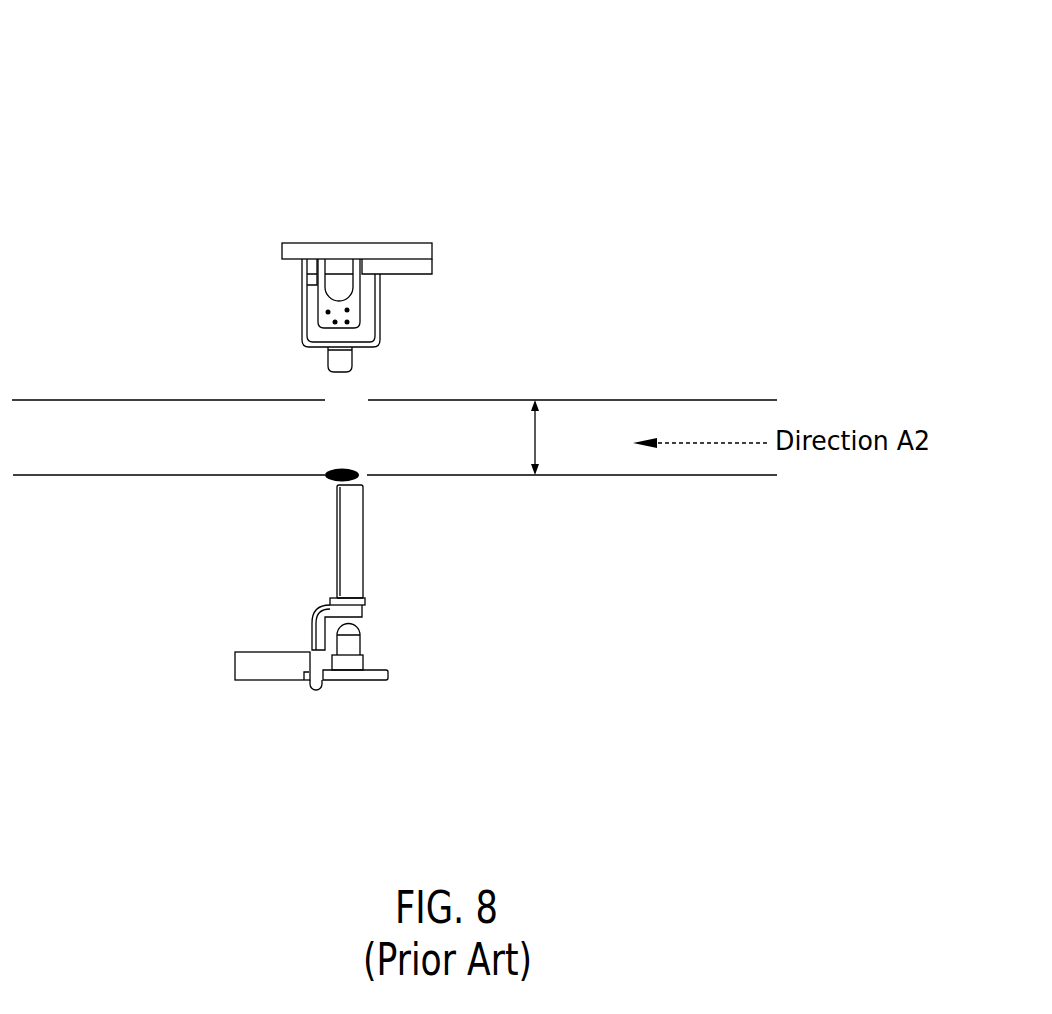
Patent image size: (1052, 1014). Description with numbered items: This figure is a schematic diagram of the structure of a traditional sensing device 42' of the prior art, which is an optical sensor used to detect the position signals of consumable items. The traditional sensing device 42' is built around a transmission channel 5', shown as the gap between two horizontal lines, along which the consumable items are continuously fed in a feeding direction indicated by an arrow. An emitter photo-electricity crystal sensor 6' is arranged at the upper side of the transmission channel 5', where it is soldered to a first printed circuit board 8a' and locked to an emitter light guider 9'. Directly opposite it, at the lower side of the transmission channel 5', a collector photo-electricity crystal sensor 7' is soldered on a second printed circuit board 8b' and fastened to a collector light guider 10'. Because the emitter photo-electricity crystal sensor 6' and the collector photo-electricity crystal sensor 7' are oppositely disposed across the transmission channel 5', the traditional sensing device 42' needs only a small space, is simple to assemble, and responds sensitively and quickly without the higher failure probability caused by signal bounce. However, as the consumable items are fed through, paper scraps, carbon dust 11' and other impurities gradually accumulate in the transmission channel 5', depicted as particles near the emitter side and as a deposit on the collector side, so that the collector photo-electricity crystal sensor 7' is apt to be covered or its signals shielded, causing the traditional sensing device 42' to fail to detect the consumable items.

The traditional sensing device 42' is at (49, 36).
The first printed circuit board 8a' is at (348, 256).
The emitter photo-electricity crystal sensor 6' is at (311, 295).
The carbon dust 11' is at (308, 418).
The emitter light guider 9' is at (373, 358).
The transmission channel 5' is at (554, 437).
The collector light guider 10' is at (303, 624).
The collector photo-electricity crystal sensor 7' is at (376, 646).
The second printed circuit board 8b' is at (348, 673).